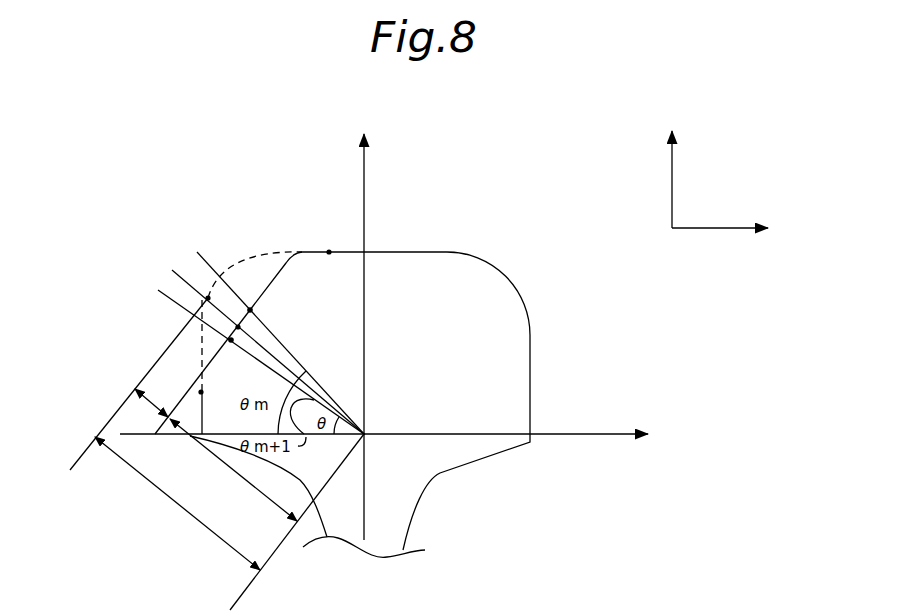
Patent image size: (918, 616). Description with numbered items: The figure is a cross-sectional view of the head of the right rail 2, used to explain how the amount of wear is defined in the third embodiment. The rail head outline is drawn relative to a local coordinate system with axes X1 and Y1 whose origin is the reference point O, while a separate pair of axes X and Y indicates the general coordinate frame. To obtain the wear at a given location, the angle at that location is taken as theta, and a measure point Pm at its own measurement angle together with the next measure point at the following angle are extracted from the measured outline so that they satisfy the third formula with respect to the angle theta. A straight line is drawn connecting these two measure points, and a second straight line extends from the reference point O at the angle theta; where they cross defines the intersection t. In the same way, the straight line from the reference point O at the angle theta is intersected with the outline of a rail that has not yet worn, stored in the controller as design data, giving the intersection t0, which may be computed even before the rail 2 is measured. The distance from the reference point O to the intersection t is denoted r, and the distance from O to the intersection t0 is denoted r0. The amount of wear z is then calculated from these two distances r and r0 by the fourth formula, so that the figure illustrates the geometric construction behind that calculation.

The rail 2 is at (437, 273).
The reference point O is at (372, 428).
The X1 axis X1 is at (397, 435).
The Y1 axis Y1 is at (362, 328).
The X axis X is at (727, 229).
The Y axis Y is at (670, 169).
The intersection t0 is at (202, 290).
The intersection t is at (238, 313).
The measure point Pm is at (257, 310).
The amount of wear z is at (151, 405).
The distance r is at (233, 470).
The distance r0 is at (177, 503).